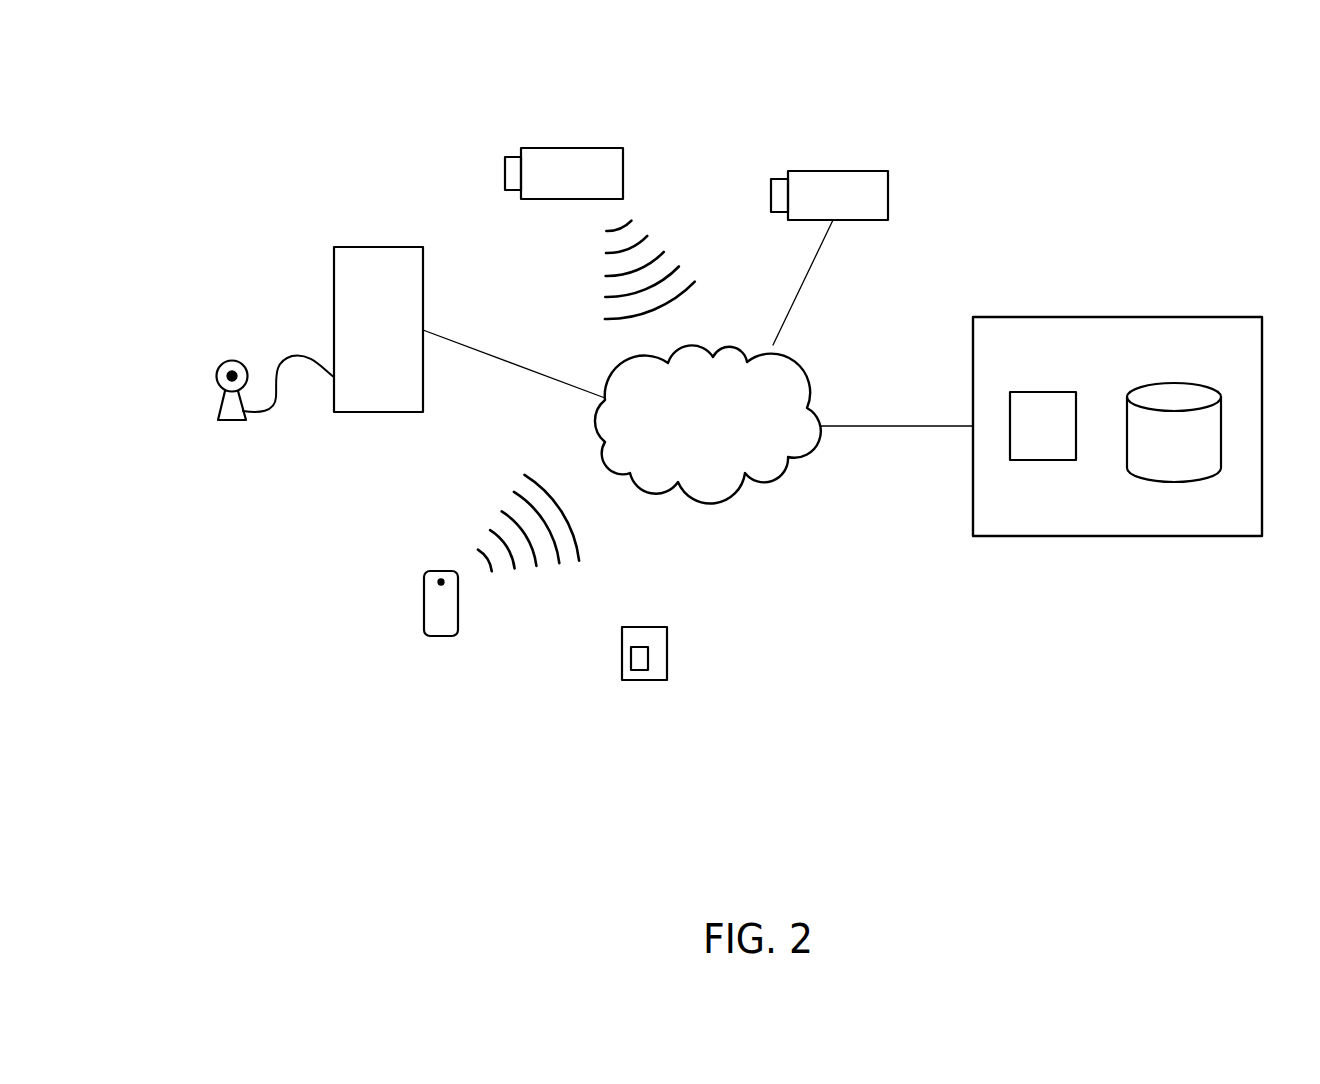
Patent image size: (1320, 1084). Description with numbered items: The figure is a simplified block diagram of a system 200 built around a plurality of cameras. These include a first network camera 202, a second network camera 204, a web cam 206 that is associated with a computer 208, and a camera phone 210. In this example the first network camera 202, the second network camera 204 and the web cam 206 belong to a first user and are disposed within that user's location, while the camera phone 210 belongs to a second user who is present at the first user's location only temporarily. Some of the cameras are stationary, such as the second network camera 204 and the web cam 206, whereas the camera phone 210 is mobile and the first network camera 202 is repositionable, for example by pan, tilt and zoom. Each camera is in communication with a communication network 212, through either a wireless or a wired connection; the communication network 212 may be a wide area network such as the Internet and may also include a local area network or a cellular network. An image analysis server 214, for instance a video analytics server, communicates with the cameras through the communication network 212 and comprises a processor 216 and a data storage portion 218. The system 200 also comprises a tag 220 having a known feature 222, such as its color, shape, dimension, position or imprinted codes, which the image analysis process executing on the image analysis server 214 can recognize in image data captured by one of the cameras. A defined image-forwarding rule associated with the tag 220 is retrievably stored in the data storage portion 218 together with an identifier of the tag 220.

The system 200 is at (1117, 755).
The first network camera 202 is at (589, 148).
The second network camera 204 is at (888, 193).
The web cam 206 is at (225, 362).
The computer 208 is at (334, 270).
The camera phone 210 is at (424, 612).
The communication network 212 is at (770, 482).
The image analysis server 214 is at (1084, 317).
The processor 216 is at (1043, 462).
The data storage portion 218 is at (1215, 390).
The tag 220 is at (667, 655).
The known feature 222 is at (641, 668).